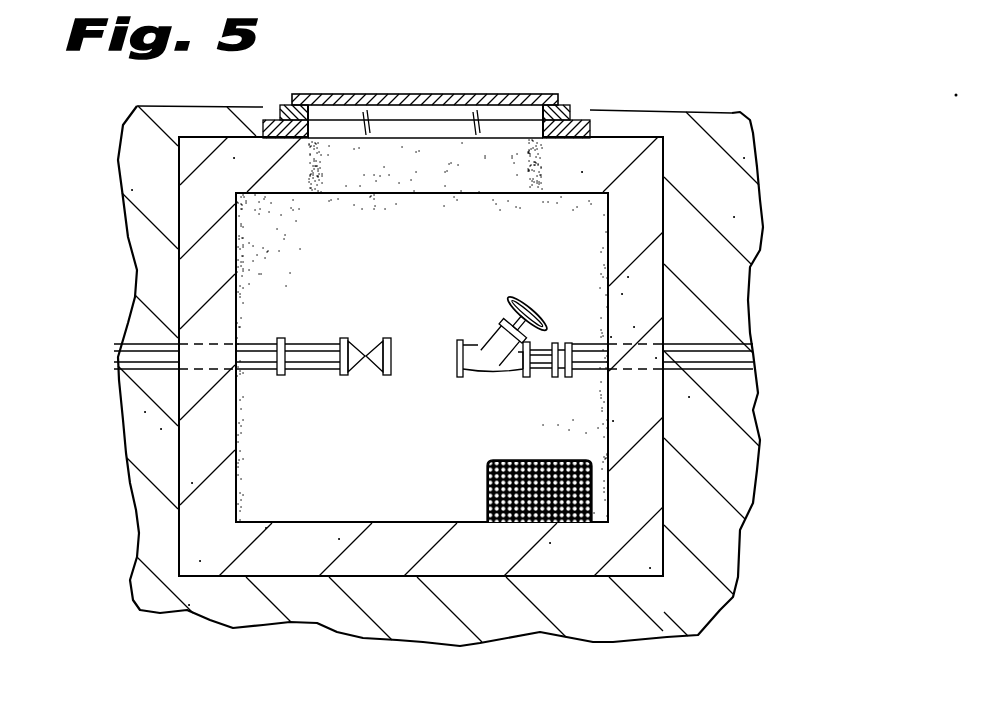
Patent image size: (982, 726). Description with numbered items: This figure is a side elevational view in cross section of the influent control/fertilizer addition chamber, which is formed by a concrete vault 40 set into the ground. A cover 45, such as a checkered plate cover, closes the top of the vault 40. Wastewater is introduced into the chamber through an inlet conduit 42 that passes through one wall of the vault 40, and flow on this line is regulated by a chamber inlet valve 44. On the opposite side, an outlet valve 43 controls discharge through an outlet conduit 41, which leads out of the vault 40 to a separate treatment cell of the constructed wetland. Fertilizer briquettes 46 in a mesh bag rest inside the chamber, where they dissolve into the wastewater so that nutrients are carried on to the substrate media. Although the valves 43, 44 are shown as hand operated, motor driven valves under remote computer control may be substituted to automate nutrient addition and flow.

The concrete vault 40 is at (657, 170).
The outlet conduit 41 is at (732, 358).
The inlet conduit 42 is at (143, 350).
The outlet valve 43 is at (472, 303).
The chamber inlet valve 44 is at (365, 326).
The cover 45 is at (540, 95).
The fertilizer briquettes 46 is at (468, 482).